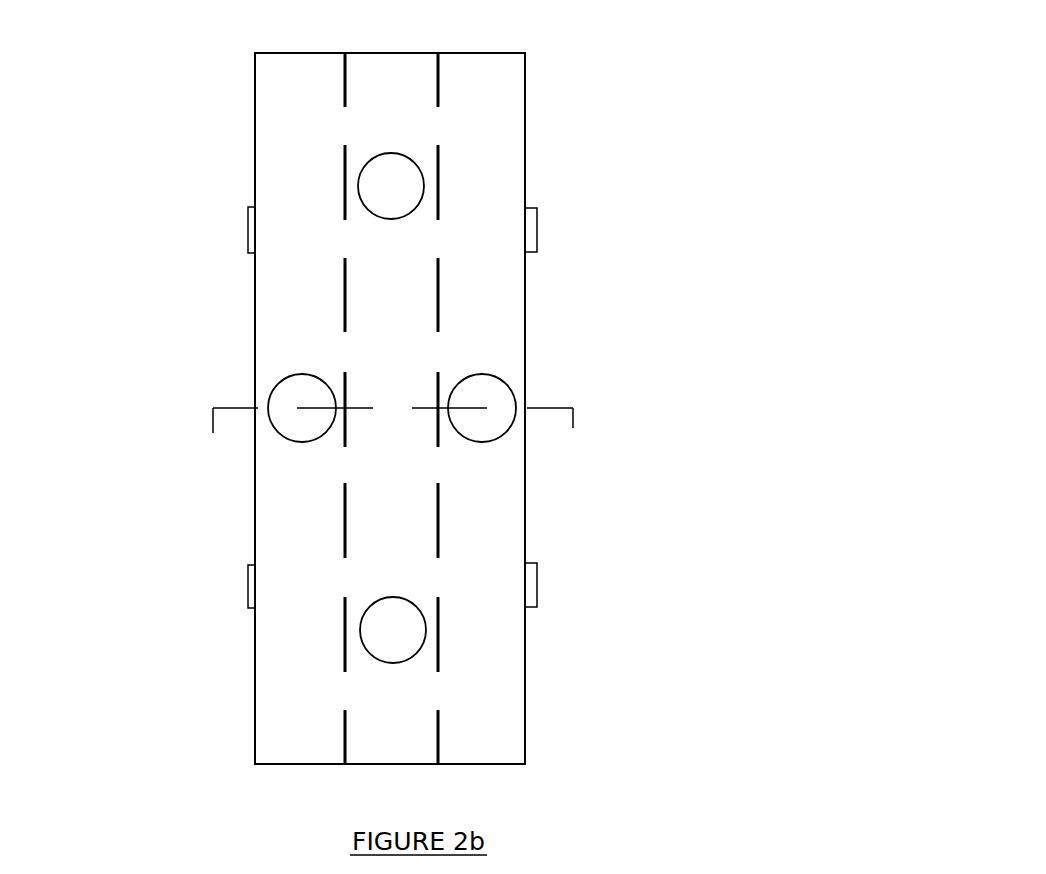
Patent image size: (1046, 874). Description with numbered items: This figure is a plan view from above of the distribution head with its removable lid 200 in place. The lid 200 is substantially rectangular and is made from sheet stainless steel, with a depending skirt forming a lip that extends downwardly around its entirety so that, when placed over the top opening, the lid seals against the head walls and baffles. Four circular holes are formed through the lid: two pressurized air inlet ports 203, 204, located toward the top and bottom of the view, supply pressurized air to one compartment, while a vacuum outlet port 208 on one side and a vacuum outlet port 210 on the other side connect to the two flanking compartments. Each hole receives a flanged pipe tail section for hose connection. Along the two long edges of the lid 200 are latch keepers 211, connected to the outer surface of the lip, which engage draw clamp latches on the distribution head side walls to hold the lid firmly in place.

The removable lid 200 is at (170, 695).
The pressurized air inlet port 203 is at (392, 185).
The pressurized air inlet port 204 is at (393, 630).
The vacuum outlet port 208 is at (293, 394).
The vacuum outlet port 210 is at (485, 427).
The latch keeper 211 is at (668, 576).